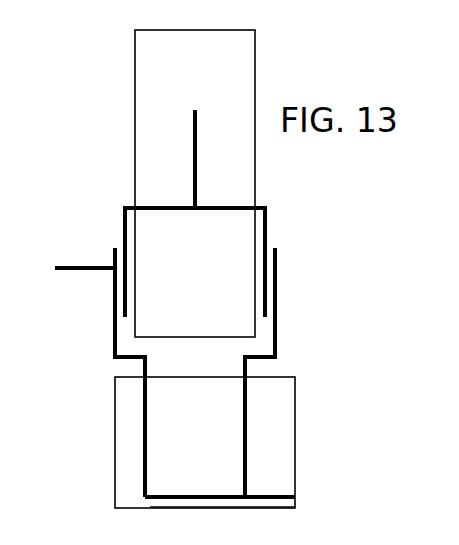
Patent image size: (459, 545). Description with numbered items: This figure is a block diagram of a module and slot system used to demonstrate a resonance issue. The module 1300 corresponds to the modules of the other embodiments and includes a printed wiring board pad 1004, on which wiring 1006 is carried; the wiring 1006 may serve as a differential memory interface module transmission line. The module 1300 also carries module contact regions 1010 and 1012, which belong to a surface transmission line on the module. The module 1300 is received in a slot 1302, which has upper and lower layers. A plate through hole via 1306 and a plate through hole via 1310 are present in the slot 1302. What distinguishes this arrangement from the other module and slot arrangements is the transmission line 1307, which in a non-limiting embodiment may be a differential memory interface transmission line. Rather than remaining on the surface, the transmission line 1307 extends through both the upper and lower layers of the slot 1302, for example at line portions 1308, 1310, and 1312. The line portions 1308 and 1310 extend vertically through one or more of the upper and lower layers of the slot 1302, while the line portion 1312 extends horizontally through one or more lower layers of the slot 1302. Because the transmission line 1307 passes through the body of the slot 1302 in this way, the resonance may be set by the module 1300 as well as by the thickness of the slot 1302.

The module 1300 is at (130, 55).
The wiring 1006 is at (197, 128).
The printed wiring board pad 1004 is at (123, 228).
The module contact region 1010 is at (110, 262).
The module contact region 1012 is at (277, 297).
The slot 1302 is at (302, 441).
The plate through hole via 1306 is at (145, 403).
The line portion 1308 is at (145, 432).
The line portion 1310 is at (246, 422).
The line portion 1312 is at (162, 495).
The transmission line 1307 is at (276, 498).